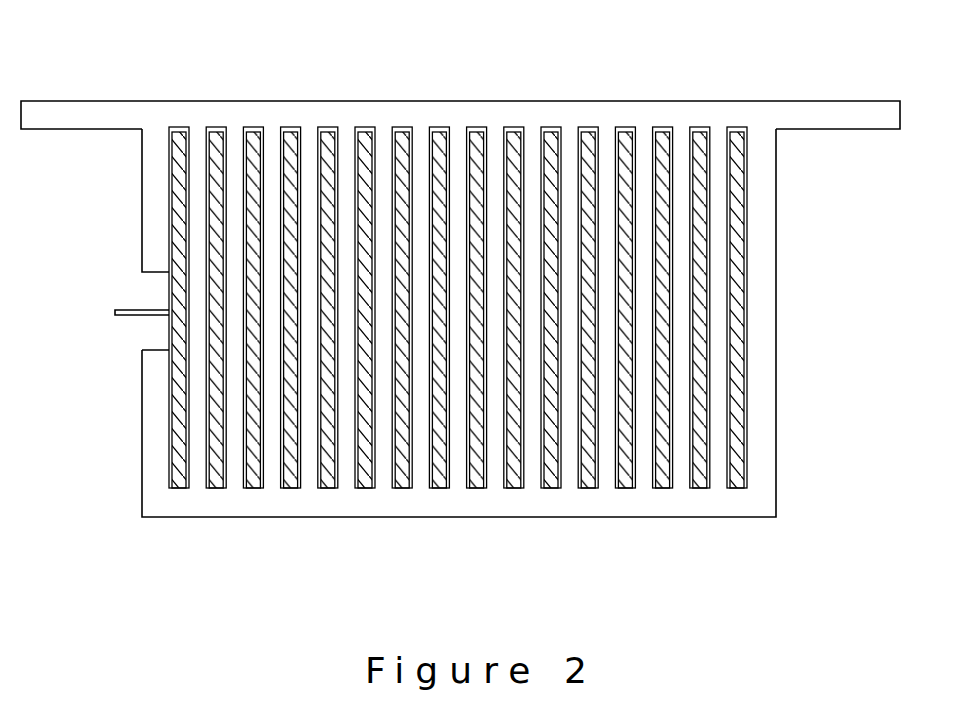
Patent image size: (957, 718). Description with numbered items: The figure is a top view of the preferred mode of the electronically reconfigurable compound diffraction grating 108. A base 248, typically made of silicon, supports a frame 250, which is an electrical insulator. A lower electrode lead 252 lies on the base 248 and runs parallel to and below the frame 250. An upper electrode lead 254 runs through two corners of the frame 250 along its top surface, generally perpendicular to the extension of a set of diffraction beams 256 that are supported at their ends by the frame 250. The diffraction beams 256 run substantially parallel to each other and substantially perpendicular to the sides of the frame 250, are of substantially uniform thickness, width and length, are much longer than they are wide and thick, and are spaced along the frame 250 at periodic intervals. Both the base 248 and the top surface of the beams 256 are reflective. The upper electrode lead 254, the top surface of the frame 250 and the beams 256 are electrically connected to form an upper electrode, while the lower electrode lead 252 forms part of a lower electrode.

The reconfigurable compound diffraction grating 108 is at (460, 313).
The base 248 is at (218, 477).
The frame 250 is at (153, 502).
The lower electrode lead 252 is at (138, 309).
The upper electrode lead 254 is at (91, 117).
The diffraction beams 256 is at (717, 305).